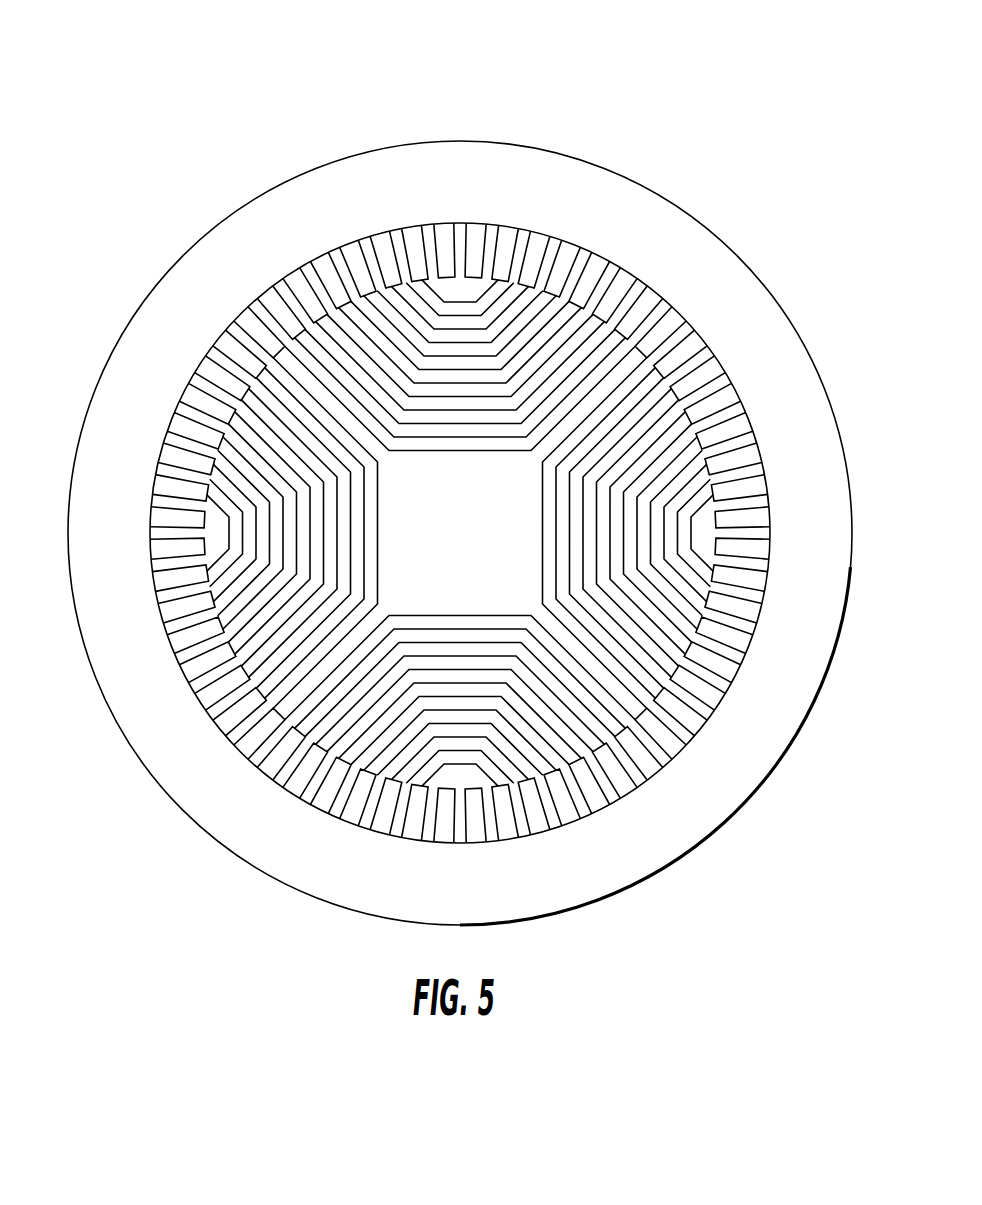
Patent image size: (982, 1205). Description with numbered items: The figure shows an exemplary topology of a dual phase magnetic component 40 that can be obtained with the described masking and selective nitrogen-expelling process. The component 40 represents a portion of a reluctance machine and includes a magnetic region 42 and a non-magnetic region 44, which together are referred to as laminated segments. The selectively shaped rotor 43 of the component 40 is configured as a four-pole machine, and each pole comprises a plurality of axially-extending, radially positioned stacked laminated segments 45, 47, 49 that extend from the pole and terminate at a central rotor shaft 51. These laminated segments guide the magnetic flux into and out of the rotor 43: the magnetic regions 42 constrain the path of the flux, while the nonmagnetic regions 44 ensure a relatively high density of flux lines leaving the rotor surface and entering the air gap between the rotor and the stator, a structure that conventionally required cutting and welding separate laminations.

The component 40 is at (727, 98).
The magnetic region 42 is at (693, 530).
The rotor 43 is at (705, 340).
The non-magnetic region 44 is at (640, 720).
The laminated segment 45 is at (212, 583).
The laminated segment 47 is at (233, 620).
The laminated segment 49 is at (258, 663).
The central rotor shaft 51 is at (471, 544).